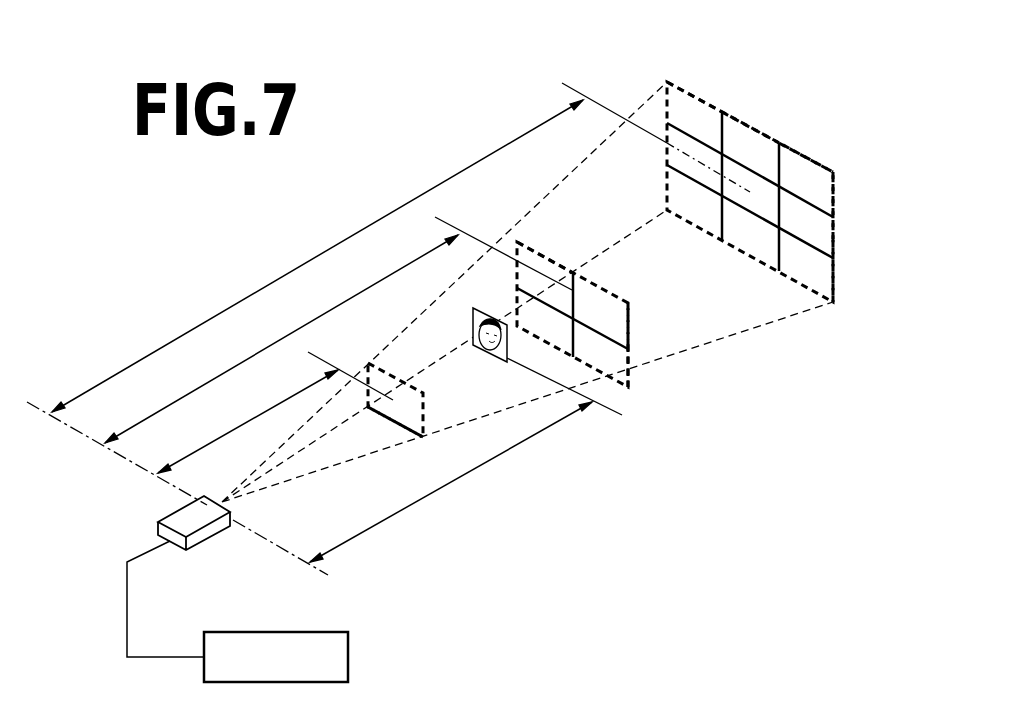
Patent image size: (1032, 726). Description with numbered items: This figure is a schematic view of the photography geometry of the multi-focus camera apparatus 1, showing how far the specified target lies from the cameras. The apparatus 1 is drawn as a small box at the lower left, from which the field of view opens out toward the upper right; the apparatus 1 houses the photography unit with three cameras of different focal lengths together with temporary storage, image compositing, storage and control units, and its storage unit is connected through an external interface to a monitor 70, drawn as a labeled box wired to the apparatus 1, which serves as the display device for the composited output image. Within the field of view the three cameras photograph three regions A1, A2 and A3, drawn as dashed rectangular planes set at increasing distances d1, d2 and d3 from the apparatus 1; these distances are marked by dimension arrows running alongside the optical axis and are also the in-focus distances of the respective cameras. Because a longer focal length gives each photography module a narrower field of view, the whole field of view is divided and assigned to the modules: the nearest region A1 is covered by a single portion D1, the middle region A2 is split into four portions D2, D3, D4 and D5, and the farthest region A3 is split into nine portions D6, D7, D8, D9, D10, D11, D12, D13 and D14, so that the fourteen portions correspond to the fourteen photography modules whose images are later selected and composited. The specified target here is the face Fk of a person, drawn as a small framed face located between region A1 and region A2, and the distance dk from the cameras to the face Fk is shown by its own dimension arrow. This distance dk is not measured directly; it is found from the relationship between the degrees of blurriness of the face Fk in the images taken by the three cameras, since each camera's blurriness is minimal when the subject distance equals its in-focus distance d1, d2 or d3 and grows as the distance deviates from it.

The multi-focus camera apparatus 1 is at (207, 535).
The monitor 70 is at (348, 657).
The region A1 is at (395, 380).
The region A2 is at (528, 250).
The region A3 is at (693, 98).
The divided region of plane A1 D1 is at (400, 420).
The divided region of plane A2 D2 is at (537, 262).
The divided region of plane A2 D3 is at (618, 318).
The divided region of plane A2 D4 is at (540, 303).
The divided region of plane A2 D5 is at (630, 353).
The divided region of plane A3 D6 is at (703, 103).
The divided region of plane A3 D7 is at (735, 123).
The divided region of plane A3 D8 is at (812, 165).
The divided region of plane A3 D9 is at (680, 168).
The divided region of plane A3 D10 is at (760, 187).
The divided region of plane A3 D11 is at (827, 232).
The divided region of plane A3 D12 is at (684, 194).
The divided region of plane A3 D13 is at (718, 225).
The divided region of plane A3 D14 is at (827, 282).
The face Fk is at (490, 352).
The distance d1 is at (275, 412).
The distance d2 is at (338, 330).
The distance d3 is at (401, 247).
The distance dk is at (466, 460).